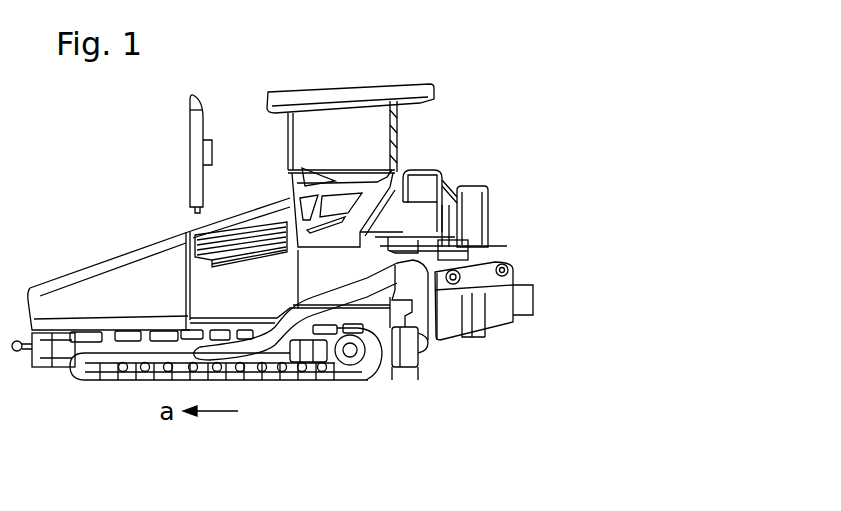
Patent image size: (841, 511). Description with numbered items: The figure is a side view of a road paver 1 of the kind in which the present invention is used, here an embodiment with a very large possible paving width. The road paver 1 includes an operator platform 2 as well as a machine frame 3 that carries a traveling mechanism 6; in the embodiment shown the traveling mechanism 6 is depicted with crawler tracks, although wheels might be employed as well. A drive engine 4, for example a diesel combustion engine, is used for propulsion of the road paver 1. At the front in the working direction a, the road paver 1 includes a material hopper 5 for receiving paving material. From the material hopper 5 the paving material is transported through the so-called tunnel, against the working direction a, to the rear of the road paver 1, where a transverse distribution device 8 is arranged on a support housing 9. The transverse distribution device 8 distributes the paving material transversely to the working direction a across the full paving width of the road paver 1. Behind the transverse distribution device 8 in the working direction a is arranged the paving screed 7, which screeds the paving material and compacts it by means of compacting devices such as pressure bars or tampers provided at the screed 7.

The road paver 1 is at (443, 134).
The operator platform 2 is at (353, 143).
The machine frame 3 is at (190, 280).
The drive engine 4 is at (235, 247).
The material hopper 5 is at (103, 285).
The traveling mechanism 6 is at (278, 352).
The paving screed 7 is at (458, 326).
The transverse distribution device 8 is at (423, 355).
The support housing 9 is at (400, 358).